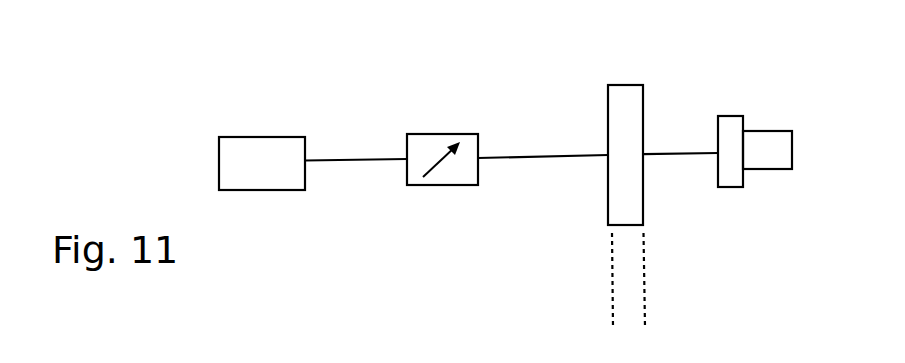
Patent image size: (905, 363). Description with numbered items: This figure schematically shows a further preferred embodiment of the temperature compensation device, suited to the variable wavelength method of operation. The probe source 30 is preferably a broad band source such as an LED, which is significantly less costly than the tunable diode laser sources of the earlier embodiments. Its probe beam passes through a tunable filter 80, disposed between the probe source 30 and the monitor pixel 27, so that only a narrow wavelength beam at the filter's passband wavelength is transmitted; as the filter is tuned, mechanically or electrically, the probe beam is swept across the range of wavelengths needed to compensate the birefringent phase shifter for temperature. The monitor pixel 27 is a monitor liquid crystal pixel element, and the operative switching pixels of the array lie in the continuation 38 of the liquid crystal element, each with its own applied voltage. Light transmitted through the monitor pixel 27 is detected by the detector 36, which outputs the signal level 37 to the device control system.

The probe source 30 is at (267, 135).
The tunable filter 80 is at (432, 133).
The monitor pixel element 27 is at (627, 85).
The continuation of the liquid crystal element 38 is at (612, 262).
The detector 36 is at (733, 115).
The signal level 37 is at (792, 150).